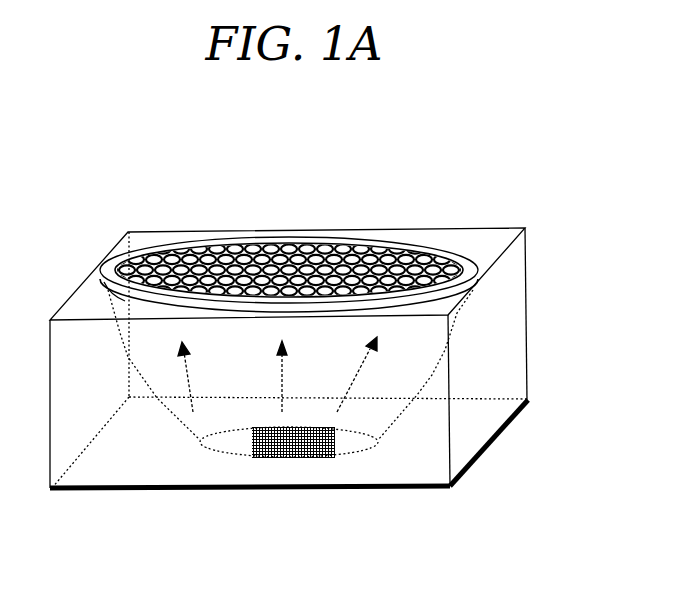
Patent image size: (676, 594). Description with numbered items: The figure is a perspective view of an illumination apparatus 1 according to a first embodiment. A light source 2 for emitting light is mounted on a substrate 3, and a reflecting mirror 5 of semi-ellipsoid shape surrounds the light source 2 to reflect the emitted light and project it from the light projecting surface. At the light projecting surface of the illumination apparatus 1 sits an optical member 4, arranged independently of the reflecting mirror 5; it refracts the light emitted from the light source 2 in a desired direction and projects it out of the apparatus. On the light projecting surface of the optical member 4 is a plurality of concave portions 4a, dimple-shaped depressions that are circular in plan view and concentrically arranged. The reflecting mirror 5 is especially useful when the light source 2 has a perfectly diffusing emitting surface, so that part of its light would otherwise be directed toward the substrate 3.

The illumination apparatus 1 is at (375, 205).
The light source 2 is at (292, 457).
The substrate 3 is at (342, 488).
The optical member 4 is at (98, 272).
The concave portions 4a is at (232, 268).
The reflecting mirror 5 is at (432, 376).